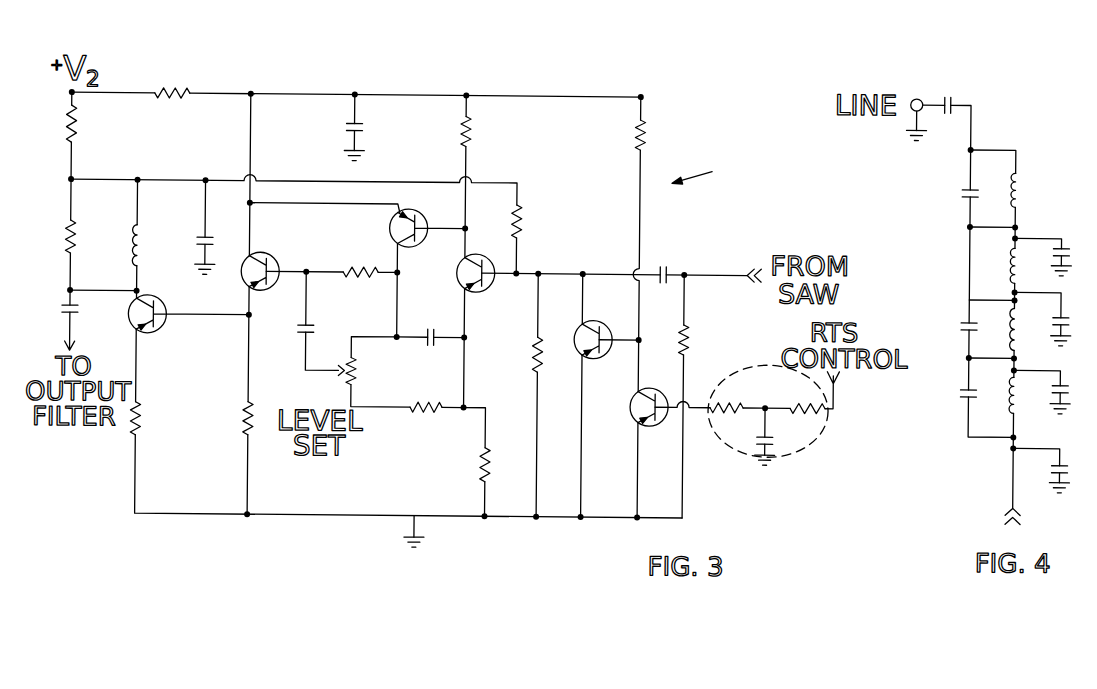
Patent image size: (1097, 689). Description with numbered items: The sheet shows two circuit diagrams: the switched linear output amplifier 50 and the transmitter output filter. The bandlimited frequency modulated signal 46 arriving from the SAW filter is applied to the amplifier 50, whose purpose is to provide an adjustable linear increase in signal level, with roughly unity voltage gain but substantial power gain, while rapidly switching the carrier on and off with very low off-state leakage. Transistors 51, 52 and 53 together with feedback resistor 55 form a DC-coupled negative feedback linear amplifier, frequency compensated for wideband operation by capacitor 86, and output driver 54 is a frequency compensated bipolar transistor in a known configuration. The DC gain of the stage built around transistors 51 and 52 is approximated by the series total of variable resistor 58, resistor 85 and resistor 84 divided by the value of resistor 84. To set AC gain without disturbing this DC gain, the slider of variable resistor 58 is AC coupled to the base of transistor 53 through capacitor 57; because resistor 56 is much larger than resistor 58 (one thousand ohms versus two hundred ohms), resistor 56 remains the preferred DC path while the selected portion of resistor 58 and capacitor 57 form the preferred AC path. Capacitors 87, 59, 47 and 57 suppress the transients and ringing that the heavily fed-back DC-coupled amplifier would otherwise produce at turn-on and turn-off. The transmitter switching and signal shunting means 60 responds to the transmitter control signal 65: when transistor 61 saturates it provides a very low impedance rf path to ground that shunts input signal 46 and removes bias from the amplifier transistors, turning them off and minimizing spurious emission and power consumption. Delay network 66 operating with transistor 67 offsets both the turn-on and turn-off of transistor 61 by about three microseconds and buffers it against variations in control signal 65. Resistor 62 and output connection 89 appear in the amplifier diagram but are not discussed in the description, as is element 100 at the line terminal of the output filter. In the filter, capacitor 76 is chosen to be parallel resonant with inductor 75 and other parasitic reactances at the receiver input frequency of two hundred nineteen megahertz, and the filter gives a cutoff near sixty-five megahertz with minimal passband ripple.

In FIG. 3, the bandlimited output 46 is at (733, 262).
In FIG. 3, the capacitor 47 is at (665, 260).
In FIG. 3, the switched output amplifier 50 is at (713, 175).
In FIG. 3, the transistor 51 is at (463, 283).
In FIG. 3, the transistor 52 is at (406, 228).
In FIG. 3, the transistor 53 is at (280, 262).
In FIG. 3, the output driver 54 is at (188, 307).
In FIG. 3, the feedback resistor 55 is at (537, 221).
In FIG. 3, the resistor 56 is at (360, 289).
In FIG. 3, the capacitor 57 is at (304, 323).
In FIG. 3, the variable resistor 58 is at (370, 374).
In FIG. 3, the capacitor 59 is at (163, 246).
In FIG. 3, the transmitter switching and signal shunting means 60 is at (550, 309).
In FIG. 3, the transistor 61 is at (597, 356).
In FIG. 3, the resistor 62 is at (92, 242).
In FIG. 3, the transmitter control signal 65 is at (838, 393).
In FIG. 3, the delay network 66 is at (797, 453).
In FIG. 3, the transistor 67 is at (629, 423).
In FIG. 4, the inductor 75 is at (1035, 188).
In FIG. 4, the capacitor 76 is at (953, 197).
In FIG. 3, the resistor 84 is at (504, 466).
In FIG. 3, the resistor 85 is at (423, 422).
In FIG. 3, the capacitor 86 is at (429, 353).
In FIG. 3, the capacitor 87 is at (360, 223).
In FIG. 3, the output line to filter 89 is at (89, 330).
In FIG. 4, the output line to filter 89 is at (1012, 484).
In FIG. 4, the line coupling capacitor 100 is at (933, 98).